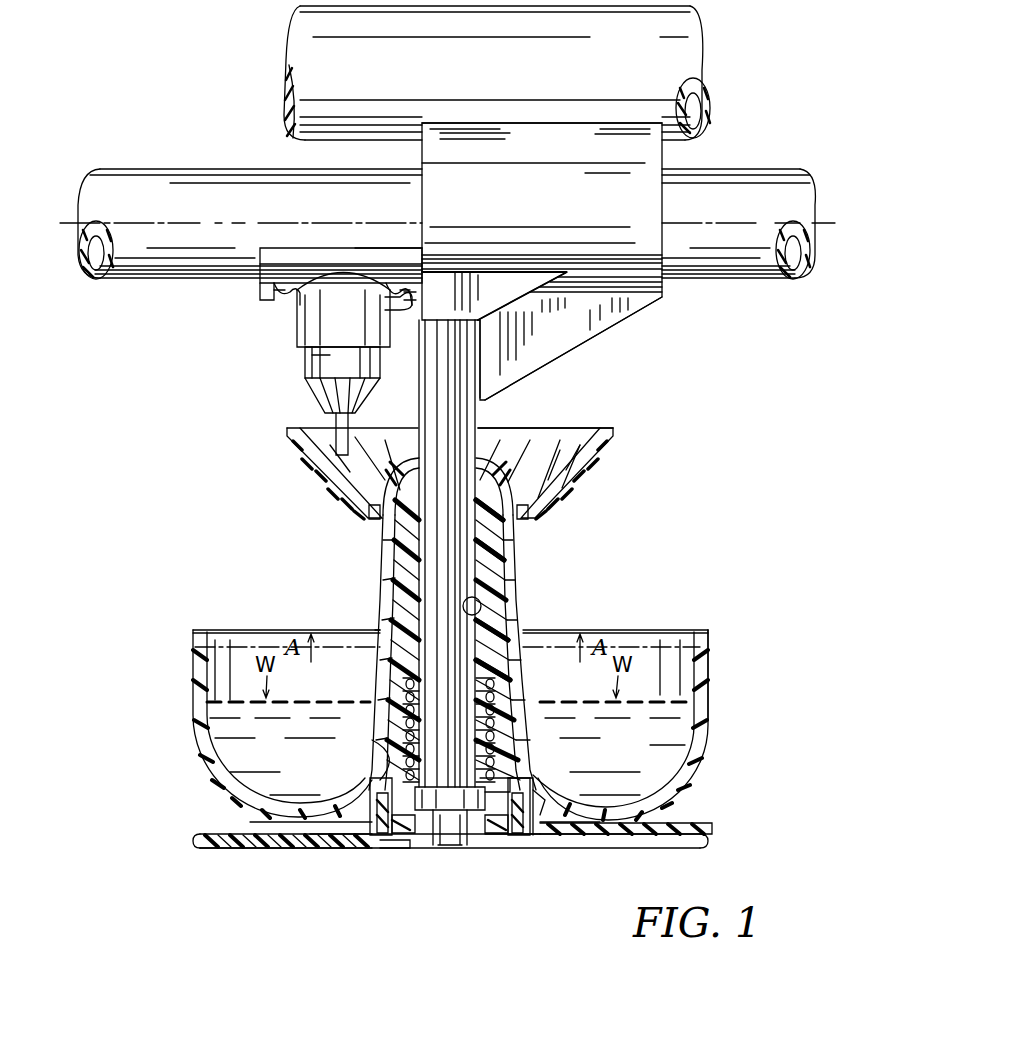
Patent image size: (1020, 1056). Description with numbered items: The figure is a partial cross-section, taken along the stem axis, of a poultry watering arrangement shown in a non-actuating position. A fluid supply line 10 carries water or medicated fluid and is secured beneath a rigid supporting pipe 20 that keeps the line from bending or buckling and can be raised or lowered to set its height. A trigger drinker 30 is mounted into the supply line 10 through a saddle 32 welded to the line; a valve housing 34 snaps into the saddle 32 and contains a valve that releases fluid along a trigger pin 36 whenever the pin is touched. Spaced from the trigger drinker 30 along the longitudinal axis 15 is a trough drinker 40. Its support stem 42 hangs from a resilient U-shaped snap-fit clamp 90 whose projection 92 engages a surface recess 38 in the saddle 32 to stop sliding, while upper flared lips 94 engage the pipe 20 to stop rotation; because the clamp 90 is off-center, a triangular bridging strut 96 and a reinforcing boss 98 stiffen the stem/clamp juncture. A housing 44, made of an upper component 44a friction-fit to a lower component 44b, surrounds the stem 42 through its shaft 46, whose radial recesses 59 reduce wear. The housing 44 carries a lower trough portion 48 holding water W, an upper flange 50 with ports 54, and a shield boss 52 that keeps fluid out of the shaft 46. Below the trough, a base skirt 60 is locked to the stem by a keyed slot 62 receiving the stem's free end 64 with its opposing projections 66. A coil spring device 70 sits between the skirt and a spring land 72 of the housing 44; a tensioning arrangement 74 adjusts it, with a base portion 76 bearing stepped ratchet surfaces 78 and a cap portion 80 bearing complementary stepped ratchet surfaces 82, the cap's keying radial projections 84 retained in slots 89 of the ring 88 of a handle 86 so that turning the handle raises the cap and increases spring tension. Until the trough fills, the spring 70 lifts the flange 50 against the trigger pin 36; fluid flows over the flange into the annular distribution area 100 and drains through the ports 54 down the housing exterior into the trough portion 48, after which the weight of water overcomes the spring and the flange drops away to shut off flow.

The fluid supply line 10 is at (212, 195).
The longitudinal axis 15 is at (838, 225).
The supporting pipe 20 is at (532, 80).
The trigger drinker 30 is at (262, 342).
The saddle 32 is at (330, 248).
The valve housing 34 is at (322, 355).
The trigger pin 36 is at (340, 452).
The surface recess 38 is at (285, 300).
The trough drinker 40 is at (179, 628).
The support stem 42 is at (430, 573).
The housing 44 is at (553, 578).
The upper component 44a is at (512, 530).
The lower component 44b is at (545, 640).
The shaft 46 is at (483, 608).
The trough portion 48 is at (710, 655).
The flange 50 is at (605, 437).
The shield boss 52 is at (520, 455).
The port 54 is at (372, 517).
The radial recesses 59 is at (380, 636).
The base skirt 60 is at (203, 834).
The keyed slot 62 is at (418, 845).
The free end 64 is at (437, 848).
The opposing projections 66 is at (455, 848).
The spring device 70 is at (495, 687).
The spring land 72 is at (382, 692).
The tensioning arrangement 74 is at (290, 848).
The base portion 76 is at (392, 846).
The stepped ratchet surfaces 78 is at (398, 745).
The cap portion 80 is at (506, 790).
The complementary stepped ratchet surfaces 82 is at (472, 845).
The keying radial projections 84 is at (380, 795).
The handle 86 is at (702, 823).
The ring 88 is at (524, 795).
The slots 89 is at (333, 848).
The snap-fit clamp 90 is at (478, 143).
The projection 92 is at (412, 295).
The upper flared lips 94 is at (587, 123).
The triangular bridging strut 96 is at (590, 320).
The reinforcing boss 98 is at (516, 297).
The annular distribution area 100 is at (545, 470).